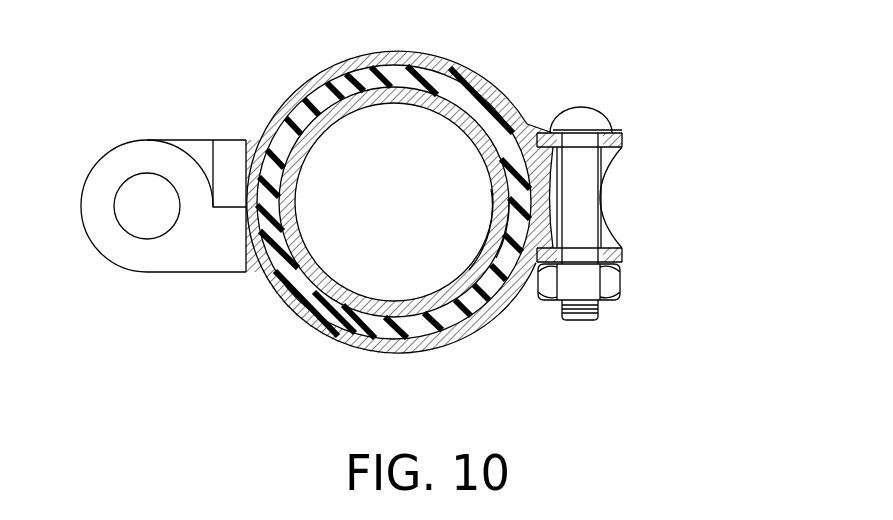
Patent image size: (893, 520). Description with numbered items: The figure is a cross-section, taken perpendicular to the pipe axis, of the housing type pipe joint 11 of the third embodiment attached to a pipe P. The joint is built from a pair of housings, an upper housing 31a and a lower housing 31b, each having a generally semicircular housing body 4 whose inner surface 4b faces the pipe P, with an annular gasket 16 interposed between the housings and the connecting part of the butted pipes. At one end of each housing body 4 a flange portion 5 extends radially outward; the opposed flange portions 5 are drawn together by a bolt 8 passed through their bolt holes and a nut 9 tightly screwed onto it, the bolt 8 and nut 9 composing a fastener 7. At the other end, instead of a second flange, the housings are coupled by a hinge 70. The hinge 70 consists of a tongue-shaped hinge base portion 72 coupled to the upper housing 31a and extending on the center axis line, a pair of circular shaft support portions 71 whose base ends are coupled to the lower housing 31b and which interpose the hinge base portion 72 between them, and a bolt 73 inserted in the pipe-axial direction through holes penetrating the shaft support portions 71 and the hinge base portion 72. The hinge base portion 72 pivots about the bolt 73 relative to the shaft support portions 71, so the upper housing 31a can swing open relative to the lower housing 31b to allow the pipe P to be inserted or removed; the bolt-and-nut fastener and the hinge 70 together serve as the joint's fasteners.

The housing body 4 is at (478, 80).
The inner surface 4b is at (503, 211).
The flange portion 5 is at (615, 140).
The fastener 7 is at (638, 213).
The bolt 8 is at (587, 182).
The nut 9 is at (610, 282).
The housing type pipe joint 11 is at (597, 72).
The annular gasket 16 is at (491, 189).
The upper housing 31a is at (304, 77).
The lower housing 31b is at (343, 351).
The hinge 70 is at (151, 157).
The shaft support portion 71 is at (92, 168).
The hinge base portion 72 is at (213, 148).
The bolt 73 is at (135, 190).
The pipe P is at (487, 263).